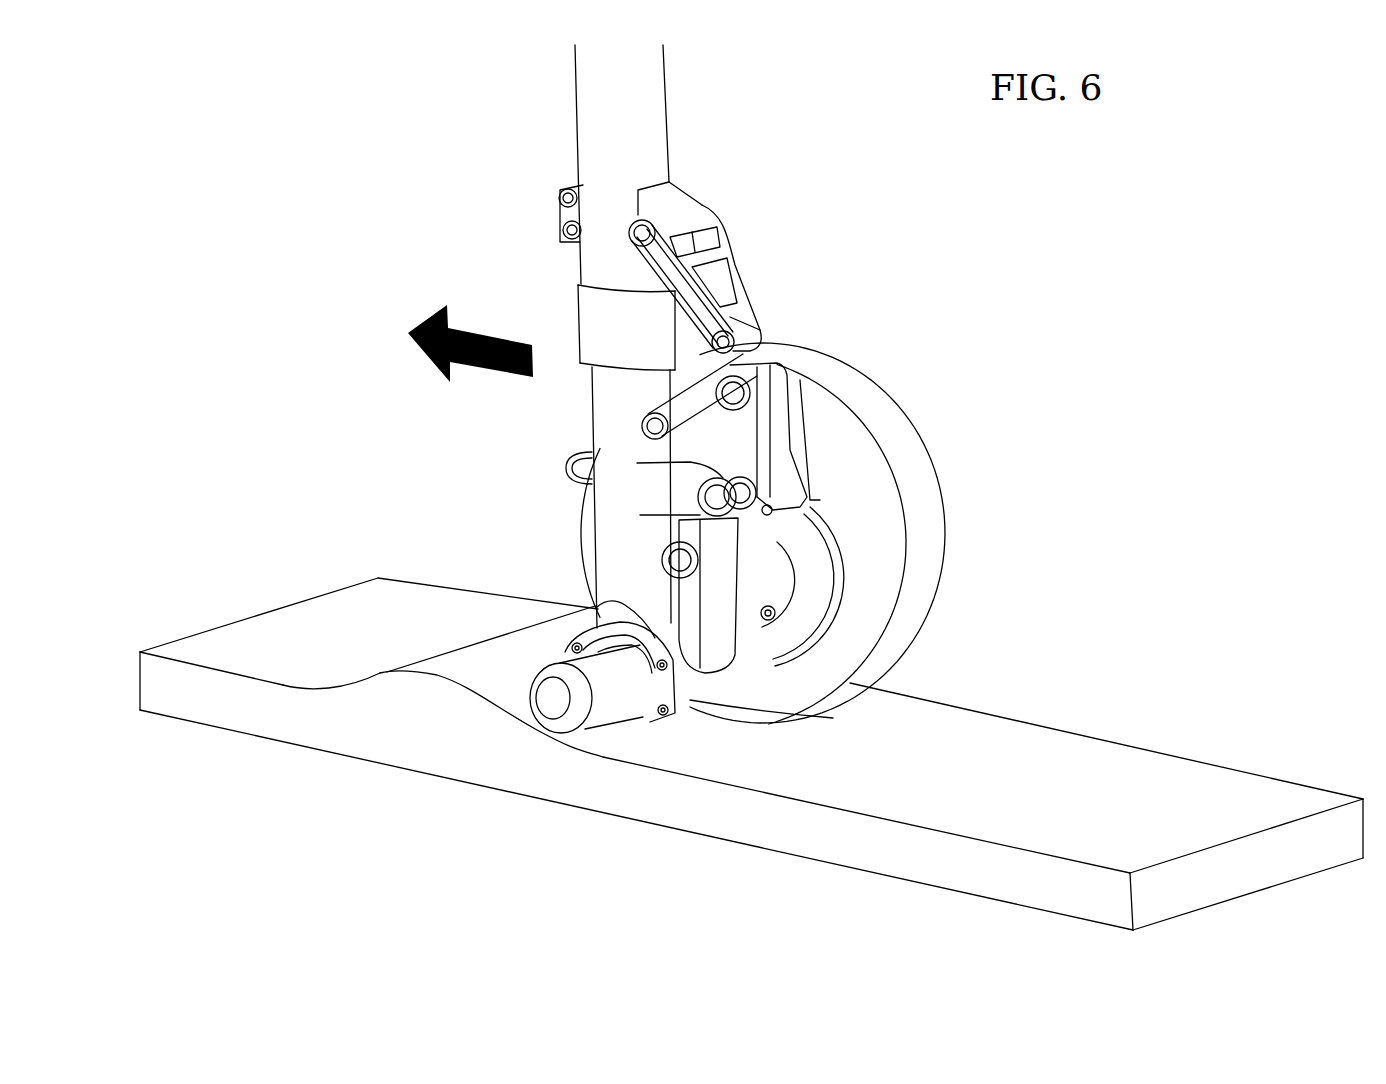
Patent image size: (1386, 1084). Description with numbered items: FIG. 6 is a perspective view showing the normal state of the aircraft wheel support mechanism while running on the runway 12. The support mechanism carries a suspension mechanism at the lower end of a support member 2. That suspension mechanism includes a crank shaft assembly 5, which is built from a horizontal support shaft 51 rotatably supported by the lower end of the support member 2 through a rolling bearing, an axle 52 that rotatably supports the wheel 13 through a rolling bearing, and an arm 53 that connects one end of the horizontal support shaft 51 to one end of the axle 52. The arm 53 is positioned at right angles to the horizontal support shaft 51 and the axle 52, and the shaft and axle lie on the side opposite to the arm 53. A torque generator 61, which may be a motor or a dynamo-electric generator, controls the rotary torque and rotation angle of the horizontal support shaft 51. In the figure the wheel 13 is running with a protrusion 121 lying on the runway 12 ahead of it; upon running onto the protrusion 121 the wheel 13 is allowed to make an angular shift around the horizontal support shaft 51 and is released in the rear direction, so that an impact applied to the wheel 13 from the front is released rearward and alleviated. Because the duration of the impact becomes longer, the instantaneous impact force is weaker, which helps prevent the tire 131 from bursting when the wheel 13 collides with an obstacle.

The support member 2 is at (570, 295).
The crank shaft assembly 5 is at (731, 631).
The runway 12 is at (1157, 773).
The wheel 13 is at (940, 465).
The horizontal support shaft 51 is at (845, 690).
The axle 52 is at (715, 542).
The arm 53 is at (713, 580).
The torque generator 61 is at (600, 713).
The protrusion 121 is at (510, 647).
The tire 131 is at (867, 400).